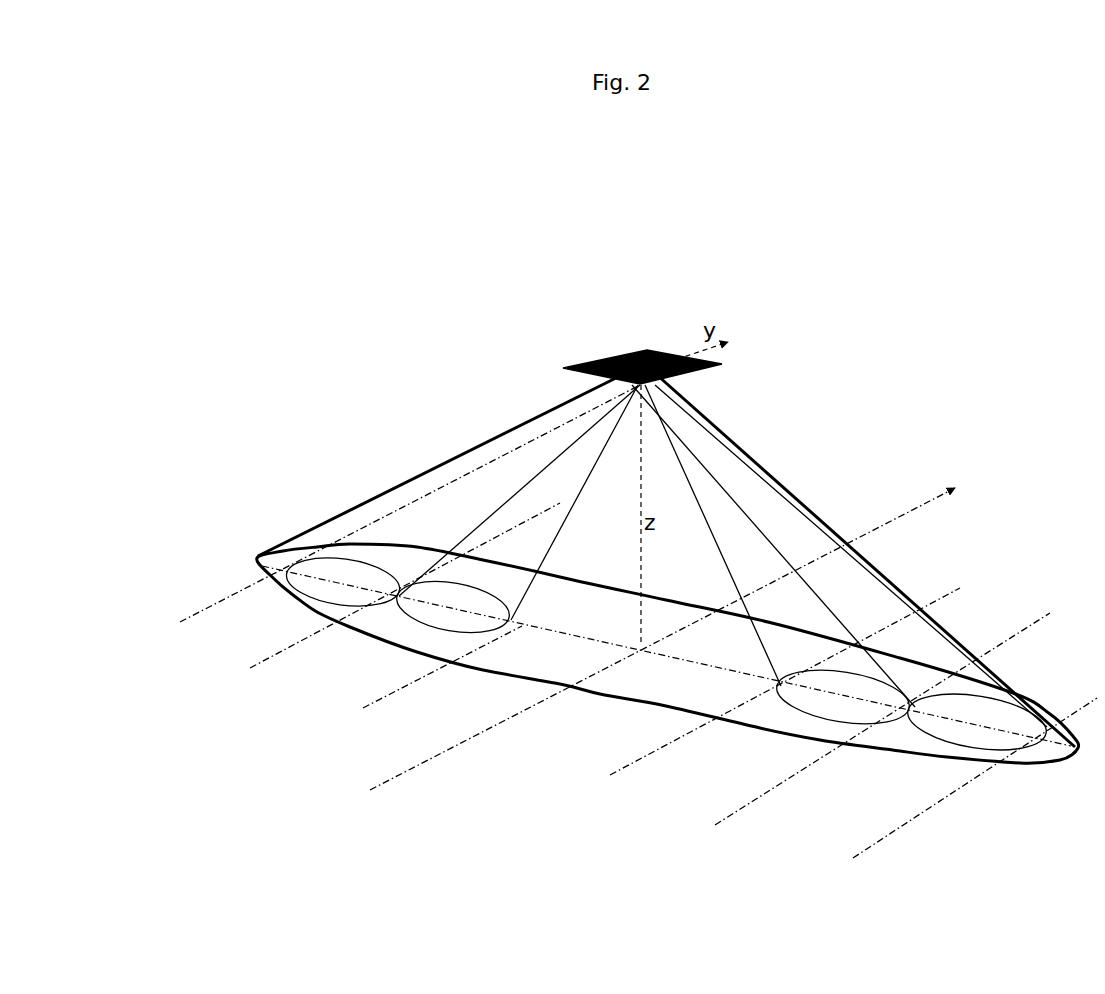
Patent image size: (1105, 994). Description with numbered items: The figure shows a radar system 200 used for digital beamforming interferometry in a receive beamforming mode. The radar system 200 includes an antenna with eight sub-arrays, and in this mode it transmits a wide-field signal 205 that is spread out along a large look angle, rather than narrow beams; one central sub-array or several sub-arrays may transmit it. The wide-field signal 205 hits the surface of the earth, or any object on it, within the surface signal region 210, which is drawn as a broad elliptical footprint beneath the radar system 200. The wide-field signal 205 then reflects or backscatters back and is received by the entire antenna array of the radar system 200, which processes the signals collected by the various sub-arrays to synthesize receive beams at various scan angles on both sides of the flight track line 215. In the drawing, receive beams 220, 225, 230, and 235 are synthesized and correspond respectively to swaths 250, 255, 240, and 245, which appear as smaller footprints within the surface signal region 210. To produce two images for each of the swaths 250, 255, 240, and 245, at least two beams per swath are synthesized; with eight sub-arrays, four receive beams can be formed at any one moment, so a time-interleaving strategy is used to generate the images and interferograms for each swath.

The radar system 200 is at (632, 362).
The wide-field signal 205 is at (653, 456).
The surface signal region 210 is at (670, 685).
The flight track line 215 is at (473, 742).
The receive beam 220 is at (720, 498).
The receive beam 225 is at (782, 527).
The receive beam 230 is at (572, 467).
The receive beam 235 is at (497, 470).
The swath 240 is at (333, 628).
The swath 245 is at (437, 658).
The swath 250 is at (830, 758).
The swath 255 is at (960, 785).